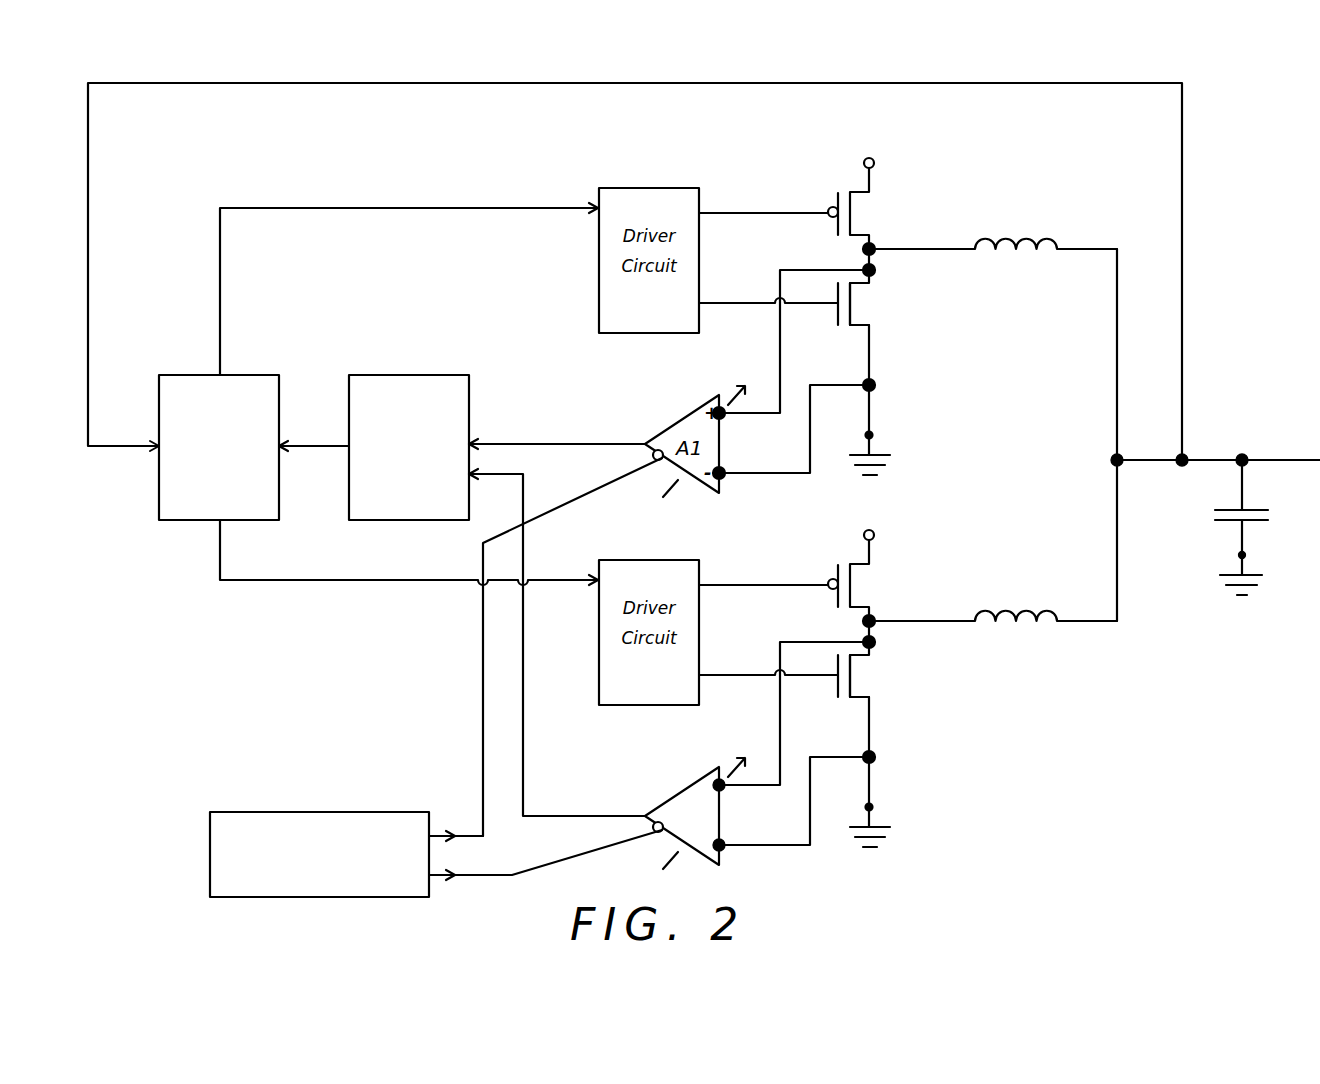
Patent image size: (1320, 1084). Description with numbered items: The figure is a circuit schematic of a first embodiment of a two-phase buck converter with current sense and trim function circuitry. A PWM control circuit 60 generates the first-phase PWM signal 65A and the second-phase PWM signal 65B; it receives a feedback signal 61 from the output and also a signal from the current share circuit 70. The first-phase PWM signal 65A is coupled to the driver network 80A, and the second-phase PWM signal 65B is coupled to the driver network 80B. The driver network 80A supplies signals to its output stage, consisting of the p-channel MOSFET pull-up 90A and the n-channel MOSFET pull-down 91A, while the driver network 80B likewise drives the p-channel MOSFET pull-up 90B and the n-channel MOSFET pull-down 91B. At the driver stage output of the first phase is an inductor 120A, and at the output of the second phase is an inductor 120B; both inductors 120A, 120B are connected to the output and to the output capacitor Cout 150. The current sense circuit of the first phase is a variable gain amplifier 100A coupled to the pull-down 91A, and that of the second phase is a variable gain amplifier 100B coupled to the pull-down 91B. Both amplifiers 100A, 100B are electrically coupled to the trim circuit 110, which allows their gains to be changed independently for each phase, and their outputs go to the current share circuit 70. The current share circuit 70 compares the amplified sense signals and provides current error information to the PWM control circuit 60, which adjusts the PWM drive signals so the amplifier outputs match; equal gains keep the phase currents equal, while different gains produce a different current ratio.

The feedback signal 61 is at (368, 83).
The PWM control circuit 60 is at (197, 375).
The current share circuit 70 is at (388, 375).
The Phase 1 PWM signal 65A is at (405, 208).
The Phase 2 PWM signal 65B is at (385, 580).
The driver network 80A is at (648, 188).
The driver network 80B is at (648, 560).
The p-channel MOSFET pull-up 90A is at (864, 218).
The n-channel MOSFET pull-down 91A is at (864, 300).
The p-channel MOSFET pull-up 90B is at (864, 590).
The n-channel MOSFET pull-down 91B is at (864, 672).
The current sense amplifier 100A is at (690, 413).
The current sense amplifier 100B is at (690, 785).
The trim circuit 110 is at (260, 812).
The inductor 120A is at (1010, 220).
The inductor 120B is at (1010, 592).
The output capacitor Cout 150 is at (1208, 515).